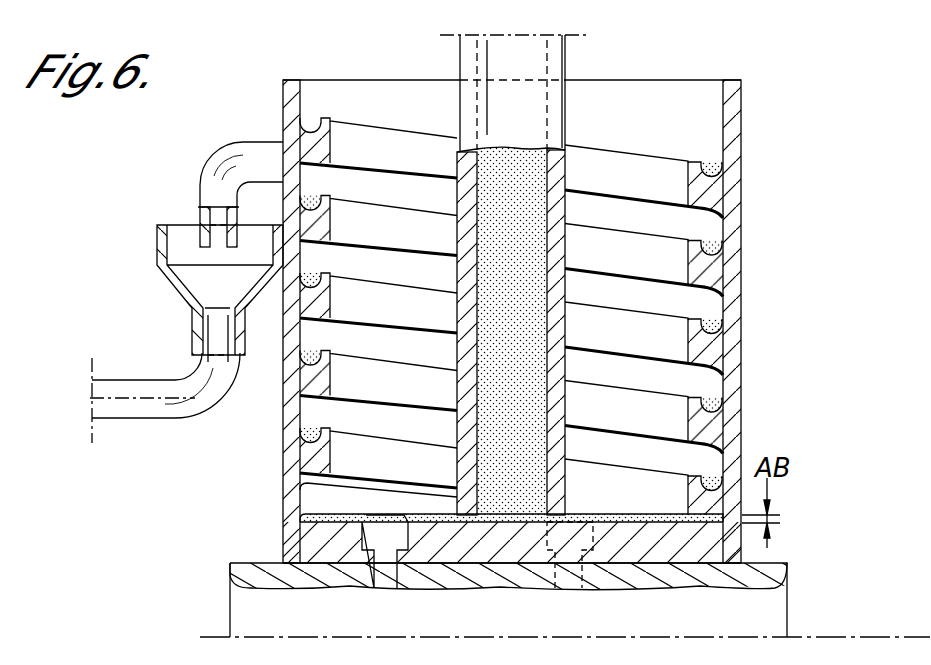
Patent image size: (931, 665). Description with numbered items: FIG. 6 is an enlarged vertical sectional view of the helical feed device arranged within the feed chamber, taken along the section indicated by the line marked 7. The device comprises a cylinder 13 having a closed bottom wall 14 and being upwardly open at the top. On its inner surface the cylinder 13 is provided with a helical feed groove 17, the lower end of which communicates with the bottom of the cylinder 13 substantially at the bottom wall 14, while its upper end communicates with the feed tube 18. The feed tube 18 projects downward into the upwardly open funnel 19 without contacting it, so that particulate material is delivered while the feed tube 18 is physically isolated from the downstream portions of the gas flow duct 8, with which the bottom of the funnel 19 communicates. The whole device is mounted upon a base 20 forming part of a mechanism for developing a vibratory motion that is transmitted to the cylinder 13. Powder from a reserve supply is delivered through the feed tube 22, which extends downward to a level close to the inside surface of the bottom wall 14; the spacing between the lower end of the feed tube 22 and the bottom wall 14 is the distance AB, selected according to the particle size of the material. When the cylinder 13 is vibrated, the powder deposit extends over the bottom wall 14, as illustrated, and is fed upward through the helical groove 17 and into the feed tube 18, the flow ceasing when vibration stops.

The section line 7- 7 is at (283, 157).
The gas flow duct 8 is at (152, 410).
The cylinder 13 is at (732, 100).
The bottom wall 14 is at (288, 535).
The helical feed groove 17 is at (713, 243).
The feed tube 18 is at (232, 155).
The funnel 19 is at (157, 257).
The base 20 is at (770, 608).
The feed tube 22 is at (552, 58).